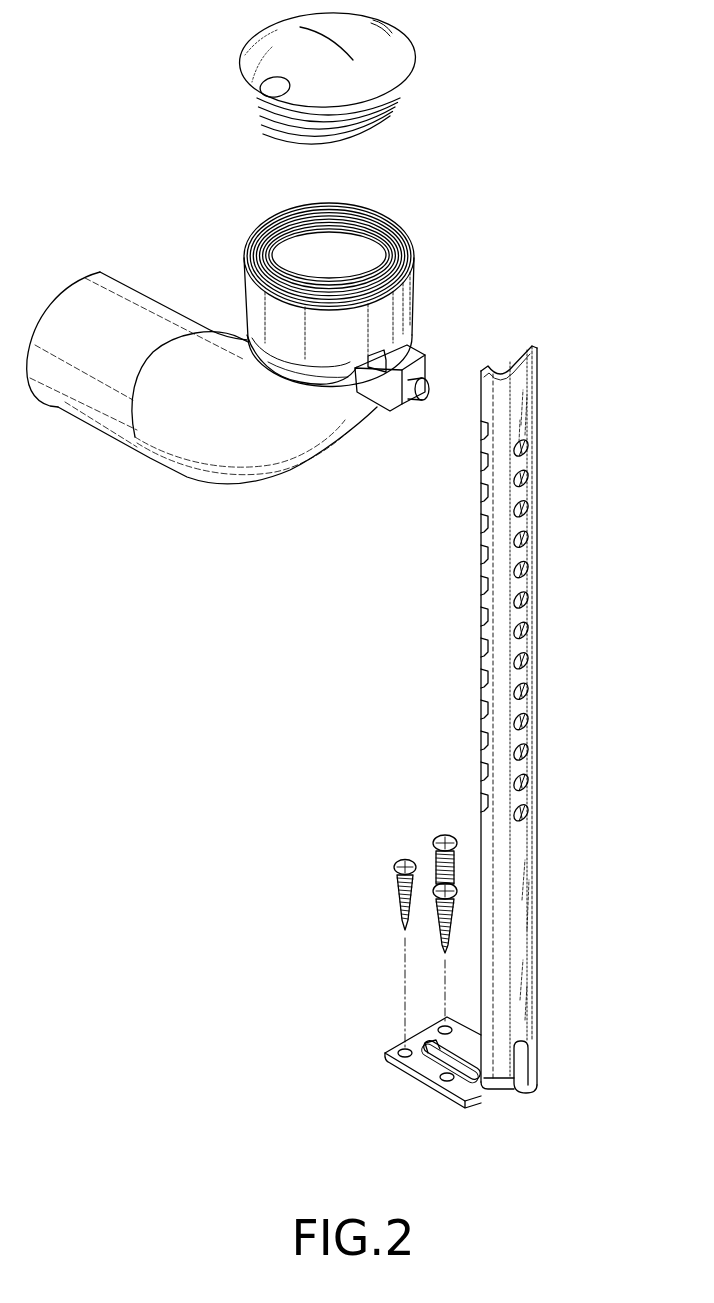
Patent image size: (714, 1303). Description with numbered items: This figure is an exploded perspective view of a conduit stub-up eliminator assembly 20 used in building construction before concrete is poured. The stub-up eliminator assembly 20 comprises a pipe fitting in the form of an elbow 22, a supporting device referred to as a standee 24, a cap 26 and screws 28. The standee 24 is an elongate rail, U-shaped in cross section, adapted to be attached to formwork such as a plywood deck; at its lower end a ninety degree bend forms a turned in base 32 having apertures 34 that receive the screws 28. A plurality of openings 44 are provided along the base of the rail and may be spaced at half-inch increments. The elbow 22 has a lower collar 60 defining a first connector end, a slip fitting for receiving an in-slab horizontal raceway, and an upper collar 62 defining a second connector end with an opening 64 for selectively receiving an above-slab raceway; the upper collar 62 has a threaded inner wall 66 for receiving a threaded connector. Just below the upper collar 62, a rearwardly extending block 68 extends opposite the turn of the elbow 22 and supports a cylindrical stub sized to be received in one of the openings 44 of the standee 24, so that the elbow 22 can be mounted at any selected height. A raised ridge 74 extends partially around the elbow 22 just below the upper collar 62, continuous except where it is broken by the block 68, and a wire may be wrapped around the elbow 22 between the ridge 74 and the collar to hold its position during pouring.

The stub-up eliminator assembly 20 is at (166, 609).
The elbow 22 is at (282, 360).
The standee 24 is at (549, 719).
The cap 26 is at (425, 53).
The screws 28 is at (388, 862).
The turned in base 32 is at (403, 1069).
The apertures 34 is at (390, 1050).
The openings 44 is at (528, 478).
The lower collar 60 is at (63, 402).
The upper collar 62 is at (363, 279).
The opening 64 is at (365, 231).
The threaded inner wall 66 is at (284, 247).
The block 68 is at (403, 415).
The raised ridge 74 is at (283, 373).